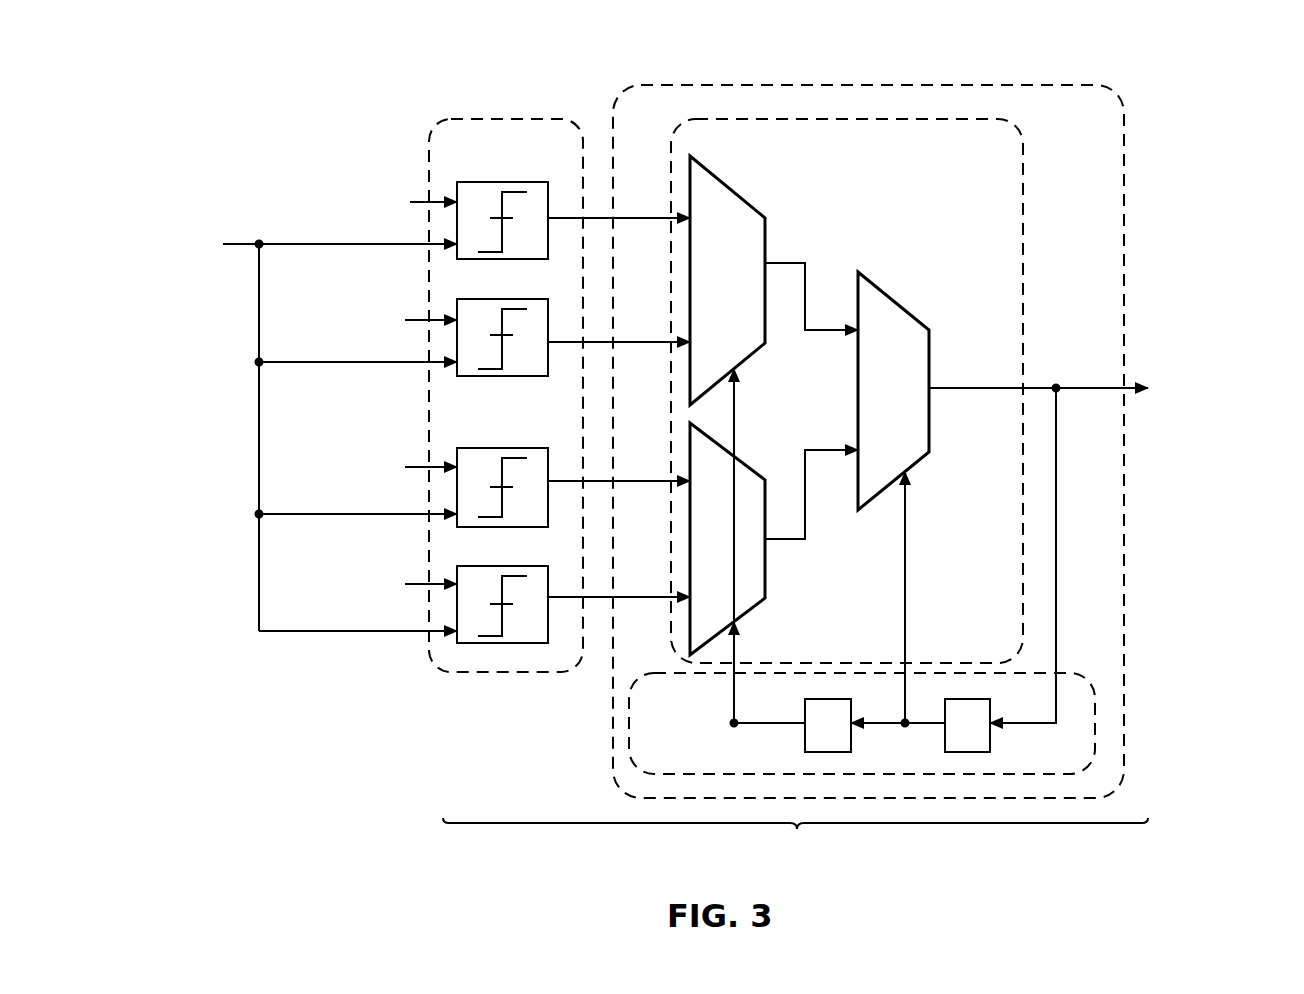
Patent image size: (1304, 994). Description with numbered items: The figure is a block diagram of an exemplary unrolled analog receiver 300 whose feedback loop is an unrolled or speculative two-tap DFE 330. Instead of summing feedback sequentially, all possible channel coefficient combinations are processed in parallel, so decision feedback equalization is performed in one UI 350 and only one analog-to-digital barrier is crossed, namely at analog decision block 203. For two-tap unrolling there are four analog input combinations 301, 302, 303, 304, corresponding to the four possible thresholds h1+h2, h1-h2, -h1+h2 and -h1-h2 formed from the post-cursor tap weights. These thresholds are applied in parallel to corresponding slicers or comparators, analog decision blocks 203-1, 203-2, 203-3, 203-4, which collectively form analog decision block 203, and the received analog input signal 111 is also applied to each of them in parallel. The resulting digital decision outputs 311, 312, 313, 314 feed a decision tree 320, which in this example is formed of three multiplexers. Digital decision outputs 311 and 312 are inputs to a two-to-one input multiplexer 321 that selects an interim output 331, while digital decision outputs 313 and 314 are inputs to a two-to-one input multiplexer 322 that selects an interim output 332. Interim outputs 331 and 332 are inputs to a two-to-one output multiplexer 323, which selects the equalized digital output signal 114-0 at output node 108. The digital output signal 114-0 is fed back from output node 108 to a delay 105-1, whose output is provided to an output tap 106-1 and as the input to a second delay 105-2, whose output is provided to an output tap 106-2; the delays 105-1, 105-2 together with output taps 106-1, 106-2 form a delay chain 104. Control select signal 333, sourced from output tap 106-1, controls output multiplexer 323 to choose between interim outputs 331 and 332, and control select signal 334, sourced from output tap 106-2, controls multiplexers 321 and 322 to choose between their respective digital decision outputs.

The unrolled analog receiver 300 is at (1163, 98).
The received analog input signal 111 is at (222, 246).
The analog decision block 203 is at (429, 143).
The analog input combination 301 is at (416, 207).
The analog input combination 302 is at (420, 326).
The analog input combination 303 is at (418, 472).
The analog input combination 304 is at (418, 590).
The analog decision block 203-1 is at (455, 262).
The analog decision block 203-2 is at (455, 380).
The analog decision block 203-3 is at (455, 529).
The analog decision block 203-4 is at (455, 650).
The digital decision output 311 is at (573, 217).
The digital decision output 312 is at (573, 341).
The digital decision output 313 is at (573, 480).
The digital decision output 314 is at (573, 596).
The decision tree 320 is at (1025, 150).
The 2-to-1 input multiplexer 321 is at (768, 227).
The 2-to-1 input multiplexer 322 is at (768, 588).
The 2-to-1 output multiplexer 323 is at (932, 353).
The interim output 331 is at (808, 278).
The interim output 332 is at (807, 515).
The control select signal 333 is at (908, 620).
The control select signal 334 is at (737, 655).
The unrolled DFE 330 is at (1127, 243).
The output node 108 is at (1058, 386).
The equalized digital output signal 114-0 is at (1150, 386).
The delay chain 104 is at (632, 727).
The delay 105-1 is at (992, 748).
The delay 105-2 is at (852, 748).
The output tap 106-1 is at (908, 720).
The output tap 106-2 is at (731, 723).
The UI 350 is at (795, 840).